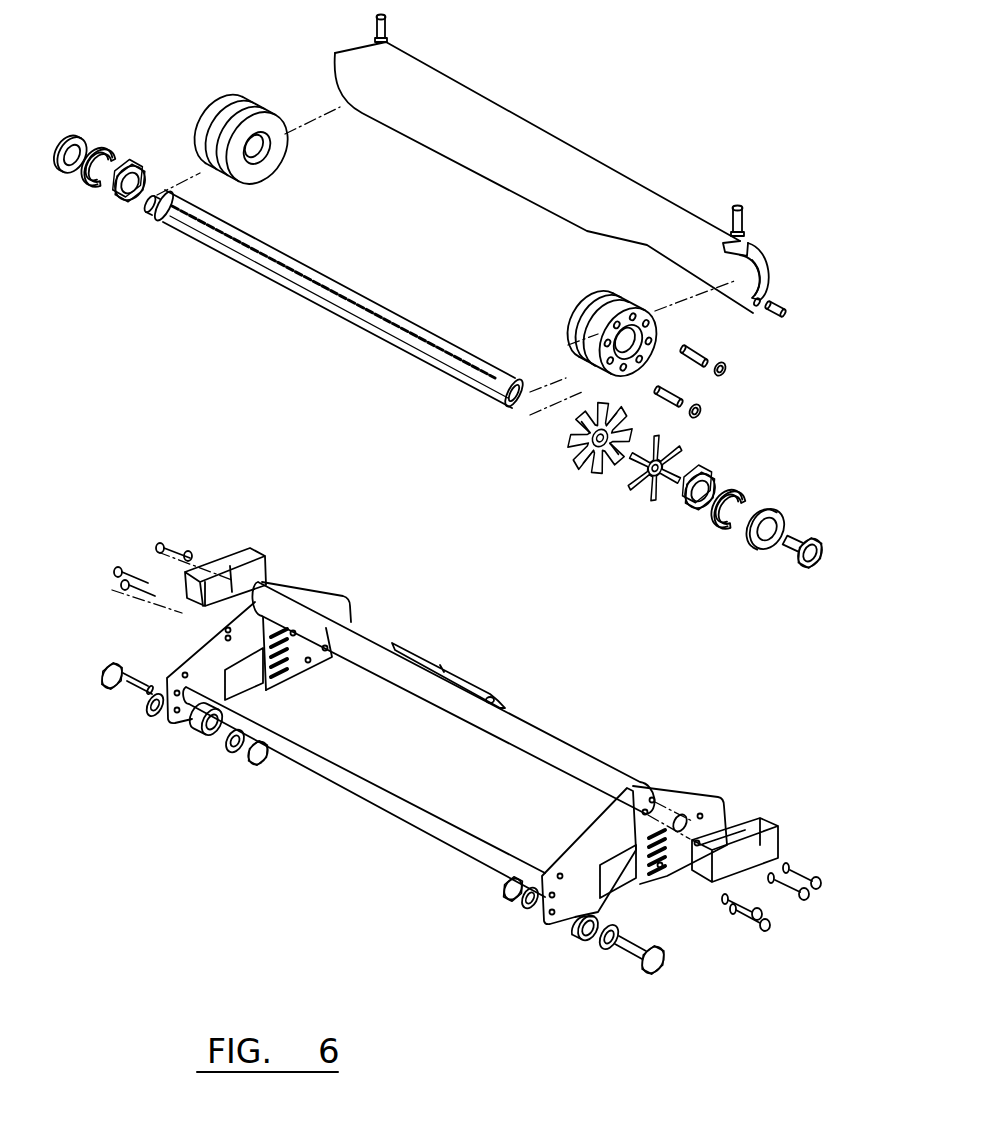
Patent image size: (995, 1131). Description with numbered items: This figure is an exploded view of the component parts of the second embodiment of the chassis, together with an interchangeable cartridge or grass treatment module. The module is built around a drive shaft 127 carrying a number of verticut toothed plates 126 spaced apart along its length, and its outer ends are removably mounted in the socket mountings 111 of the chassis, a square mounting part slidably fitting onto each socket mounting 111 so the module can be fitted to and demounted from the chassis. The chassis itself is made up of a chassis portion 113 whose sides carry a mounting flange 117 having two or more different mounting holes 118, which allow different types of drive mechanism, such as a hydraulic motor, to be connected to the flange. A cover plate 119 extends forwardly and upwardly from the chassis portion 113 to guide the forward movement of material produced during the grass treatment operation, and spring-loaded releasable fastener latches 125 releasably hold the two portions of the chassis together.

The socket mounting 111 is at (600, 887).
The chassis portion 113 is at (318, 598).
The mounting flange 117 is at (220, 108).
The mounting holes 118 is at (687, 310).
The cover plate 119 is at (525, 152).
The releasable fastener latch 125 is at (232, 560).
The verticut toothed plate 126 is at (558, 468).
The drive shaft 127 is at (307, 287).